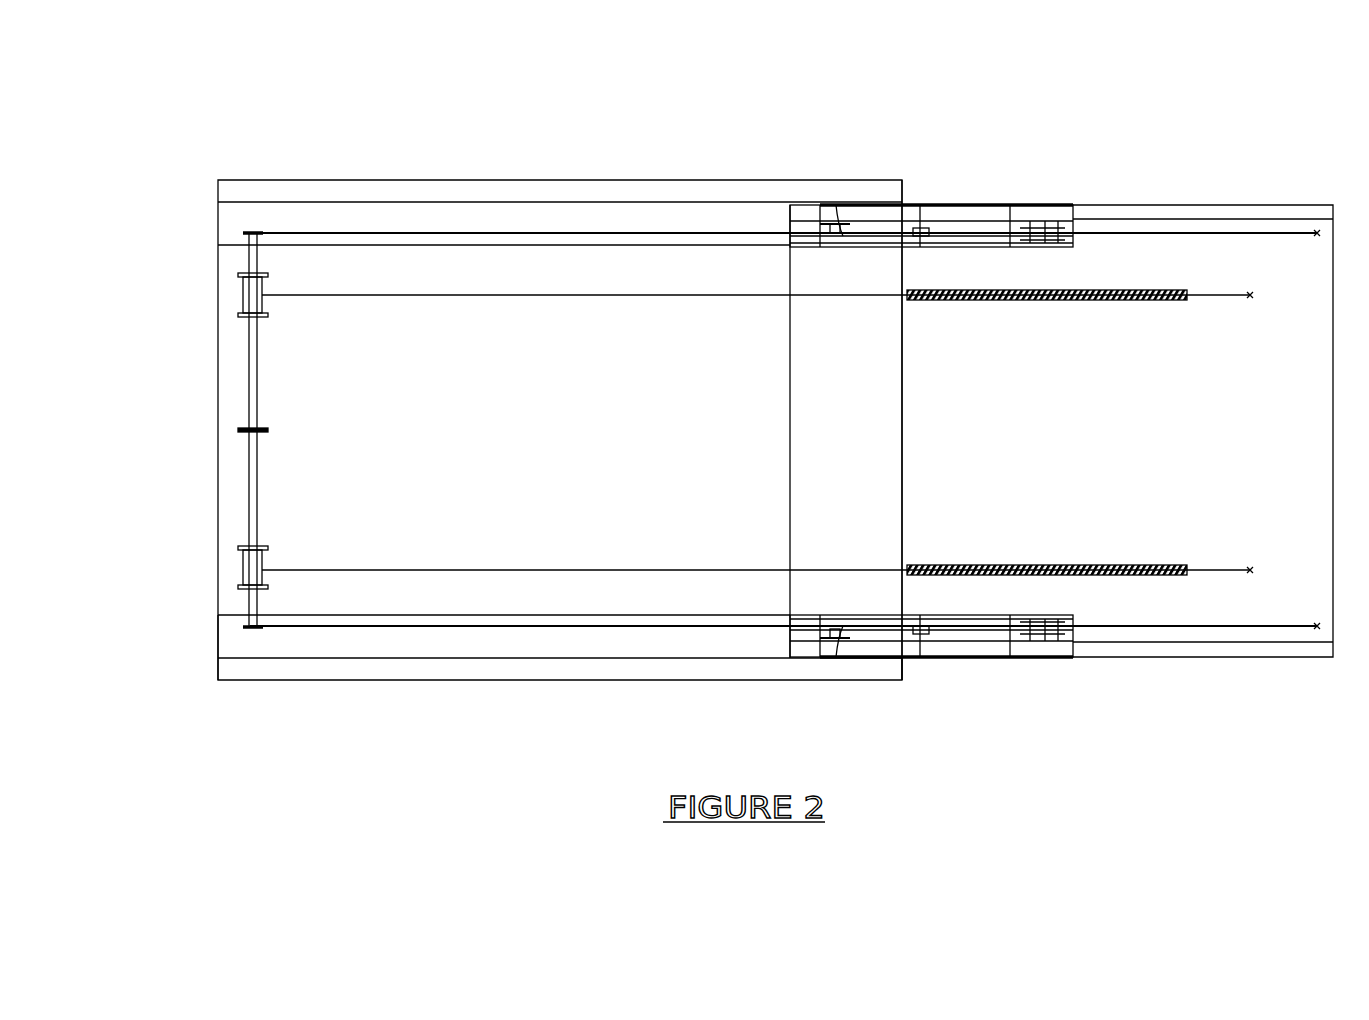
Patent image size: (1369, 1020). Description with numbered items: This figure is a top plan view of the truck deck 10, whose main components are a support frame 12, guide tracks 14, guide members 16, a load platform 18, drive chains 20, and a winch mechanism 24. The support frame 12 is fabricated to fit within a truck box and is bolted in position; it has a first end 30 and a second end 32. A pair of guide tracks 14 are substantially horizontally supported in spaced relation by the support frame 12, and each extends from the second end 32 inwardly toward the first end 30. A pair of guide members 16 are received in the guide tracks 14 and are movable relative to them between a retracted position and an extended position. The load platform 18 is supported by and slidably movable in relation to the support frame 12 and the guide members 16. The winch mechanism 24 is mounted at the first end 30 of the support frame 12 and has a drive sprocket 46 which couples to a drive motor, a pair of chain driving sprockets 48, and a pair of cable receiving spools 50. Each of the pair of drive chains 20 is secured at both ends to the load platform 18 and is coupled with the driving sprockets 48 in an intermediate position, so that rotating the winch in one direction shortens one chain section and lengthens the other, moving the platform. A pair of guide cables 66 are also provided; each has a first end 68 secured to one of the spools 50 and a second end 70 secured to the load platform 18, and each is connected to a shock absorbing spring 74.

The truck deck 10 is at (412, 121).
The support frame 12 is at (455, 681).
The guide tracks 14 is at (783, 245).
The guide members 16 is at (955, 217).
The load platform 18 is at (1192, 258).
The drive chains 20 is at (575, 233).
The winch mechanism 24 is at (258, 490).
The first end 30 is at (217, 653).
The second end 32 is at (906, 681).
The drive sprocket 46 is at (268, 429).
The chain driving sprockets 48 is at (258, 258).
The cable receiving spools 50 is at (267, 317).
The guide cables 66 is at (615, 296).
The first end 68 is at (296, 297).
The second end 70 is at (1210, 296).
The shock absorbing spring 74 is at (985, 301).